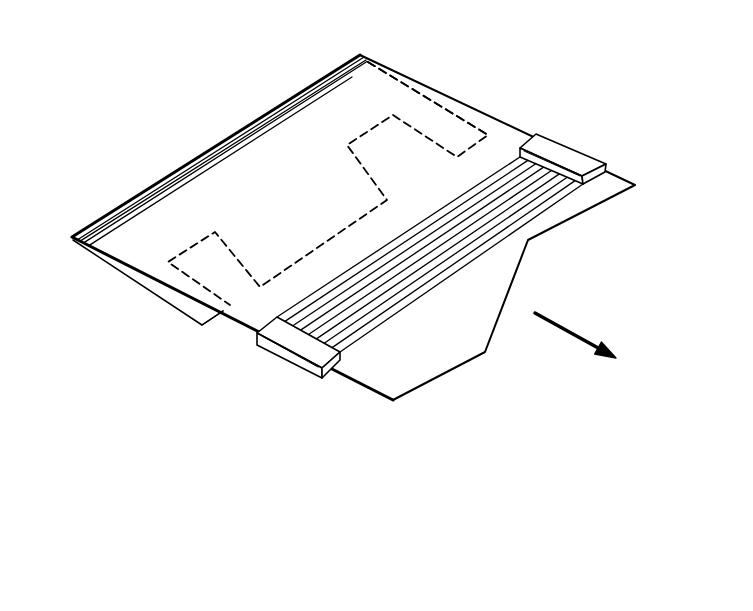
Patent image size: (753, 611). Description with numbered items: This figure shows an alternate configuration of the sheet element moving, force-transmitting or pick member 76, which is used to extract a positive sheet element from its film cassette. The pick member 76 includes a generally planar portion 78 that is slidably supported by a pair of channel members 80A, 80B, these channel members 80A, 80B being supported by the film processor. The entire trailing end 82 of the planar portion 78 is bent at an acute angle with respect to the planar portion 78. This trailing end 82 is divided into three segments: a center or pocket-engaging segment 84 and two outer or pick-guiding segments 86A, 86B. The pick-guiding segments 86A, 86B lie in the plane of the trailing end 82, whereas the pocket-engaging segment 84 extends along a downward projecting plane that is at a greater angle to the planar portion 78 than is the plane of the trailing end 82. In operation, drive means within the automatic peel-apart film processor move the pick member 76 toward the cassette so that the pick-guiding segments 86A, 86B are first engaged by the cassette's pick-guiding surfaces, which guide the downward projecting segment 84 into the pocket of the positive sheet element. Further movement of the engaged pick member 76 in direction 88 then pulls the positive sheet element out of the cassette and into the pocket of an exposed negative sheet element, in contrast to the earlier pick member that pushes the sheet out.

The pick member 76 is at (160, 104).
The planar portion 78 is at (275, 308).
The channel member 80A is at (578, 155).
The channel member 80B is at (287, 348).
The trailing end 82 is at (103, 258).
The pocket-engaging segment 84 is at (320, 232).
The pick-guiding segment 86A is at (460, 143).
The pick-guiding segment 86B is at (193, 308).
The direction 88 is at (571, 326).